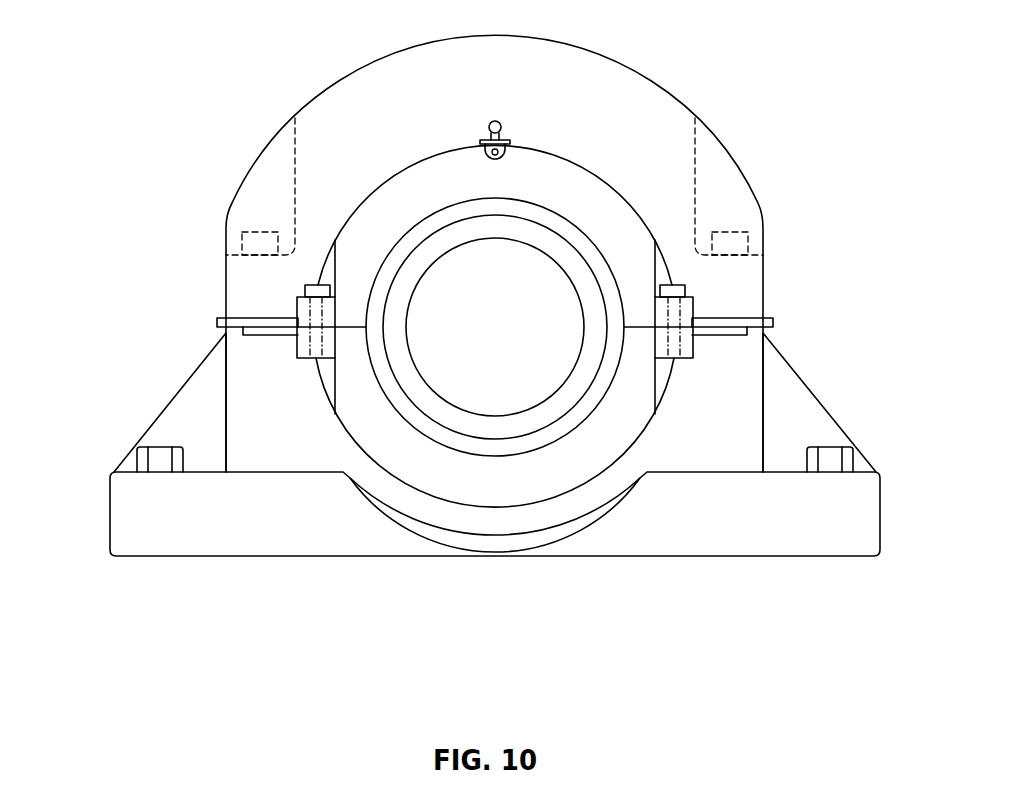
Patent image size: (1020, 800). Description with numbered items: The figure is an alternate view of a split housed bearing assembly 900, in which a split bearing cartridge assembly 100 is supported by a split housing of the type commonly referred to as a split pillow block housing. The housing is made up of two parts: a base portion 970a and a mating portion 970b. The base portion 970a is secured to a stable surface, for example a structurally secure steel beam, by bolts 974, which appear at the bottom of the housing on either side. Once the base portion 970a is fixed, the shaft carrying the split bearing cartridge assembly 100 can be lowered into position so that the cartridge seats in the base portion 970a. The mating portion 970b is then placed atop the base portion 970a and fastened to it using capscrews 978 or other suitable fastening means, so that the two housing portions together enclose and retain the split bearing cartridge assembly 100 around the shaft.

The split housed bearing assembly 900 is at (252, 70).
The mating portion 970b is at (647, 103).
The base portion 970a is at (747, 387).
The capscrews 978 is at (255, 232).
The bolts 974 is at (160, 453).
The split bearing cartridge assembly 100 is at (637, 209).